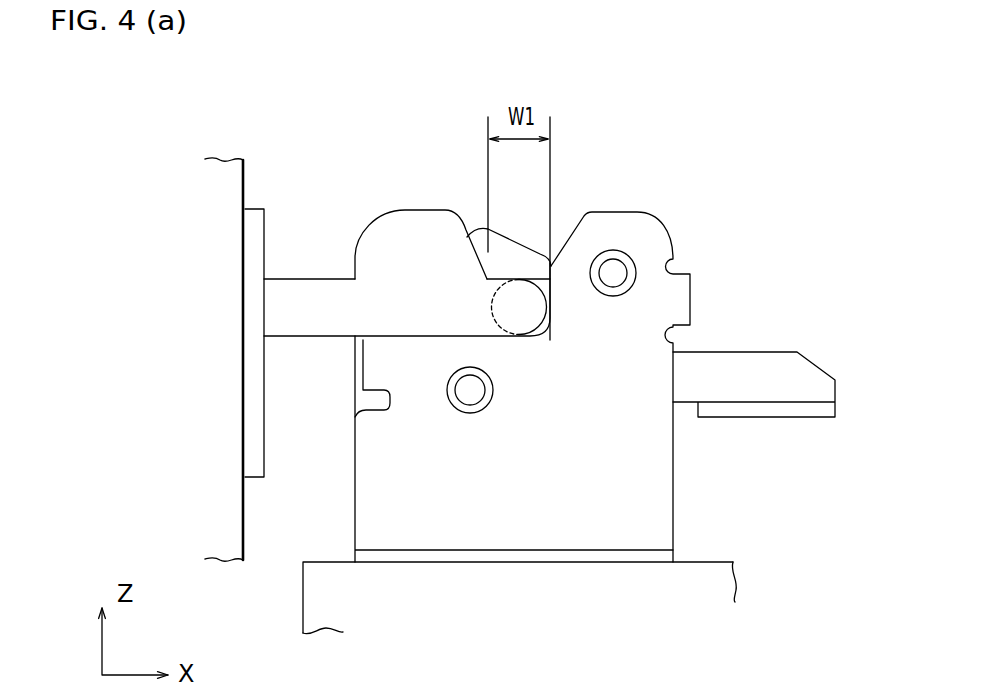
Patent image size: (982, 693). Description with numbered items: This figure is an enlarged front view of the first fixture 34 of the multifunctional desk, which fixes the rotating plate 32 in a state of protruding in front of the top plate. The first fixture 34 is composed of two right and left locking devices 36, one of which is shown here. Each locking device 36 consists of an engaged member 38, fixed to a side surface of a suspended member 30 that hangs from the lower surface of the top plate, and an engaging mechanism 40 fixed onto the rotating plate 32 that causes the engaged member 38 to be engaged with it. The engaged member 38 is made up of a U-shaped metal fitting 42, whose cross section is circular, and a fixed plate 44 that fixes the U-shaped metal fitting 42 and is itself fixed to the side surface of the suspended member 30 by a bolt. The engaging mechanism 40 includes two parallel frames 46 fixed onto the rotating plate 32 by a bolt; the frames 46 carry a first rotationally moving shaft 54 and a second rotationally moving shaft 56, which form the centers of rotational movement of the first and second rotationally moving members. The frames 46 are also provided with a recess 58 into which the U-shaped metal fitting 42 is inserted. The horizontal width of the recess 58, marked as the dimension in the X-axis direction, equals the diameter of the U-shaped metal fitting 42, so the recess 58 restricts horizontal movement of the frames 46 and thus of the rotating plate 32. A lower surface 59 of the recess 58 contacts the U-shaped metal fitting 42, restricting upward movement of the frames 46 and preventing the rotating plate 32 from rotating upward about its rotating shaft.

The suspended member 30 is at (249, 172).
The rotating plate 32 is at (718, 561).
The first fixture 34 is at (706, 114).
The locking device 36 is at (706, 114).
The engaged member 38 is at (407, 290).
The engaging mechanism 40 is at (651, 355).
The U-shaped metal fitting 42 is at (330, 319).
The fixed plate 44 is at (256, 440).
The frame 46 is at (652, 238).
The first rotationally moving shaft 54 is at (613, 268).
The second rotationally moving shaft 56 is at (470, 390).
The recess 58 is at (556, 248).
The lower surface 59 is at (544, 322).